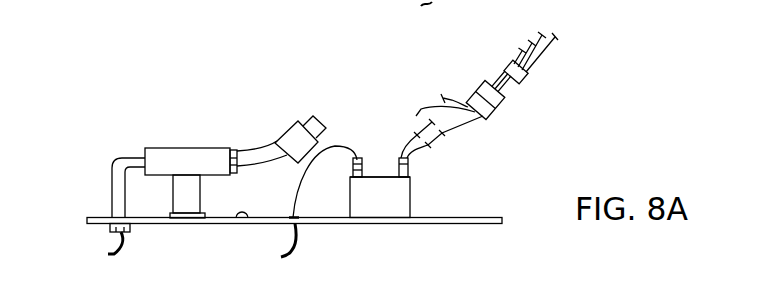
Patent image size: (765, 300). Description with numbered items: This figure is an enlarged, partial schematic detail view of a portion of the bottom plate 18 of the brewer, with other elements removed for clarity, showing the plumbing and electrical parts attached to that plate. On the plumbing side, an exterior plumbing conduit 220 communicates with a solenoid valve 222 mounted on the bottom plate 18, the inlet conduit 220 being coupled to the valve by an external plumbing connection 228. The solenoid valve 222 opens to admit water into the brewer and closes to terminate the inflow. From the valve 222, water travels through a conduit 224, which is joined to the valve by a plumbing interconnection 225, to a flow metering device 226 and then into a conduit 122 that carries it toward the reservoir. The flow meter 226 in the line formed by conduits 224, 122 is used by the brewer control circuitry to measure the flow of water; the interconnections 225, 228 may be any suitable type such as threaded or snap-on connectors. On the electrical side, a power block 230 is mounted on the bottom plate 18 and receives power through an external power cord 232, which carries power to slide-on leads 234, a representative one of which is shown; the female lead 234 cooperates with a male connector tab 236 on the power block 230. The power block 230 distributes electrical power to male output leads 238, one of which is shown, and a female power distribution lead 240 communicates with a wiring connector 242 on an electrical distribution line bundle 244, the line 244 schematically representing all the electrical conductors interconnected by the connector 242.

The bottom plate 18 is at (247, 223).
The conduit 122 is at (304, 121).
The exterior plumbing conduit 220 is at (110, 244).
The solenoid valve 222 is at (210, 155).
The conduit 224 is at (245, 168).
The plumbing interconnection 225 is at (233, 148).
The flow metering device 226 is at (285, 134).
The external plumbing connection 228 is at (132, 230).
The power block 230 is at (383, 213).
The external power cord 232 is at (297, 233).
The slide-on lead 234 is at (359, 157).
The male connector tab 236 is at (363, 168).
The male output lead 238 is at (410, 182).
The female power distribution lead 240 is at (408, 162).
The wiring connector 242 is at (477, 88).
The electrical distribution line bundle 244 is at (527, 72).